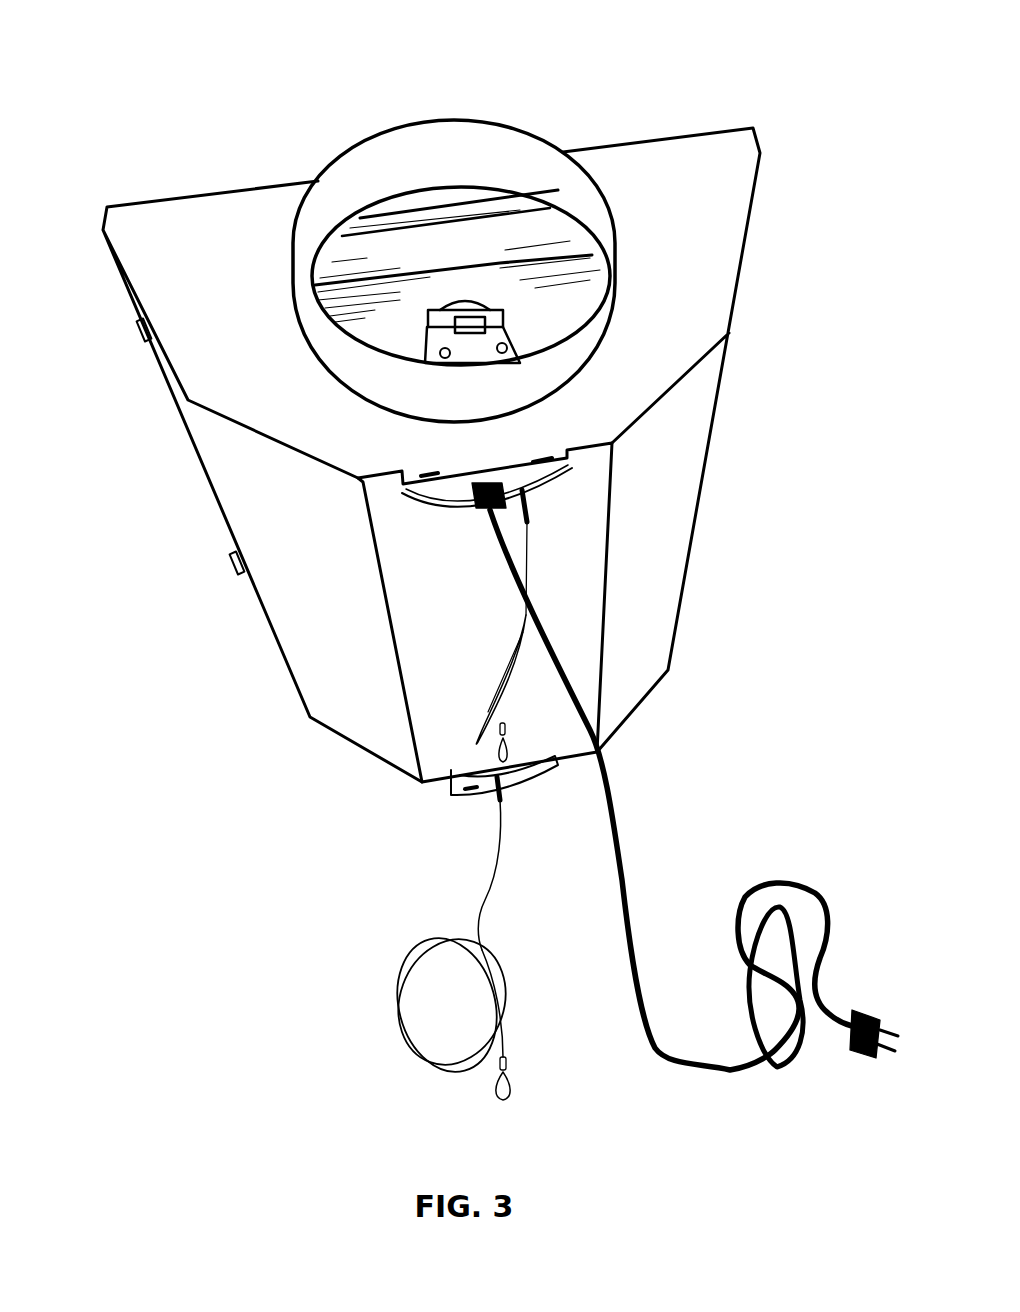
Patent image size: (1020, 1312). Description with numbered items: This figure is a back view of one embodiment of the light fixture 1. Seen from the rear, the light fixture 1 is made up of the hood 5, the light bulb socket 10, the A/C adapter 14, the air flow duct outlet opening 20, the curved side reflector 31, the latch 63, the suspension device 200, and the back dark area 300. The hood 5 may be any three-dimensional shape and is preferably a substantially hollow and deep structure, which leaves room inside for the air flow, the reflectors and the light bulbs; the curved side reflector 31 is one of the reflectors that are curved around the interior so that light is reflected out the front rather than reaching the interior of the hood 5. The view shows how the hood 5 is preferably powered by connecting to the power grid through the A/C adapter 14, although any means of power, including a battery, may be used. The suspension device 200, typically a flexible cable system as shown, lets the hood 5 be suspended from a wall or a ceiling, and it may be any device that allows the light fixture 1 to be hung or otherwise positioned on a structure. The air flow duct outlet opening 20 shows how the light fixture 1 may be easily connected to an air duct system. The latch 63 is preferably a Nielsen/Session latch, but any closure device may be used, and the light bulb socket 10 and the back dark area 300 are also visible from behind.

The light fixture 1 is at (100, 175).
The hood 5 is at (713, 220).
The light bulb socket 10 is at (427, 330).
The A/C adapter 14 is at (522, 497).
The air flow duct outlet opening 20 is at (598, 300).
The curved side reflector 31 is at (475, 235).
The latch 63 is at (143, 340).
The suspension device 200 is at (520, 623).
The back dark area 300 is at (569, 246).